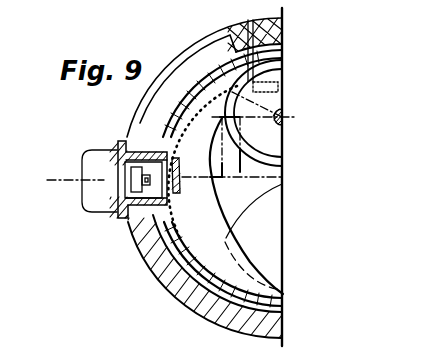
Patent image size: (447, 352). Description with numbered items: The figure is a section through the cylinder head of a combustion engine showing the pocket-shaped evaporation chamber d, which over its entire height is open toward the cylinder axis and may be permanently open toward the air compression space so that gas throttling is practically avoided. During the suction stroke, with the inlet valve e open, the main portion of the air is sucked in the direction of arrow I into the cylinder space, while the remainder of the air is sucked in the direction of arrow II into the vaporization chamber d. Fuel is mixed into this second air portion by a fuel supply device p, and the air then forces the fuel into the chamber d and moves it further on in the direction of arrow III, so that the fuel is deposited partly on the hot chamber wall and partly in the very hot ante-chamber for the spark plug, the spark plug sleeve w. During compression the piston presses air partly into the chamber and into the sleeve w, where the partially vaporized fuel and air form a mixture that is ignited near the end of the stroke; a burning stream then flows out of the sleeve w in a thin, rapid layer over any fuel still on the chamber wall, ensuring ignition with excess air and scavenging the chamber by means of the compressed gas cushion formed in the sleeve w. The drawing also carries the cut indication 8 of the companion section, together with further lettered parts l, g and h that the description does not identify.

The evaporation chamber d is at (203, 74).
The fuel supply device p is at (241, 41).
The shaft l is at (95, 152).
The spark plug sleeve w is at (180, 163).
The arrow I is at (246, 205).
The arrow II is at (249, 90).
The arrow III is at (181, 117).
The inlet valve e is at (254, 205).
The volute channel g is at (236, 215).
The channel wall h is at (236, 214).
The section line 8- 8 is at (66, 157).